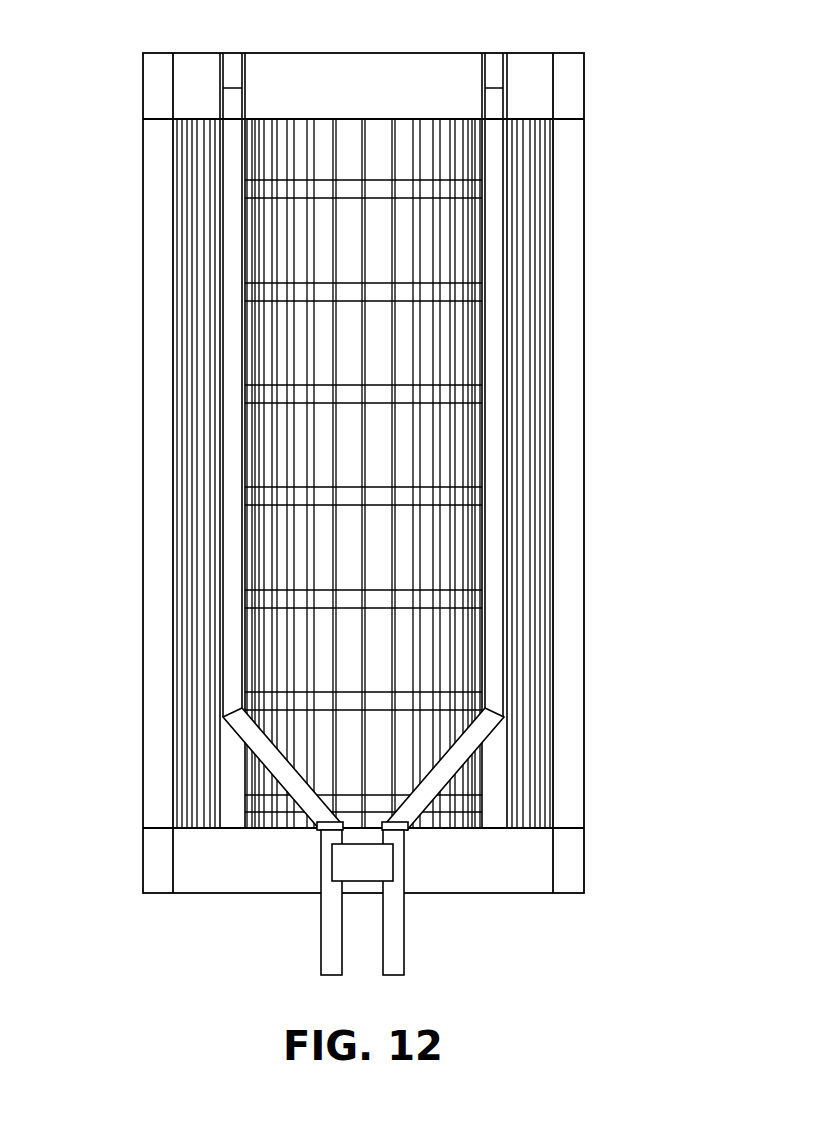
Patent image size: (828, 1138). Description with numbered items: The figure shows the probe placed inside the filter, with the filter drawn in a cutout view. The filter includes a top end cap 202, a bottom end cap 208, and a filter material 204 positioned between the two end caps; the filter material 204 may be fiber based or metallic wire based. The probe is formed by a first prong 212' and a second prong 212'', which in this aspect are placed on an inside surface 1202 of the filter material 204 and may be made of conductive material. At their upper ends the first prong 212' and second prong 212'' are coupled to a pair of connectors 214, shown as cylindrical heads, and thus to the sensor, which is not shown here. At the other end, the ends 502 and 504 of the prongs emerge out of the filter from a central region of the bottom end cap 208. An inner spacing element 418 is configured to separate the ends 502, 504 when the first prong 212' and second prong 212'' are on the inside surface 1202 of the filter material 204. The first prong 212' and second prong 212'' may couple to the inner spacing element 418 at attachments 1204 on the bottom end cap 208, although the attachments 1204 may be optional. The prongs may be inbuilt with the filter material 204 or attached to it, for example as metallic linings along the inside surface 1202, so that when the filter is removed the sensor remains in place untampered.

The top end cap 202 is at (567, 83).
The filter material 204 is at (525, 358).
The bottom end cap 208 is at (555, 863).
The first prong 212' is at (517, 474).
The second prong 212'' is at (197, 474).
The pair of connectors 214 is at (233, 68).
The inner spacing element 418 is at (378, 873).
The end 502 is at (395, 963).
The end 504 is at (332, 962).
The inside surface 1202 is at (205, 577).
The attachments 1204 is at (325, 832).